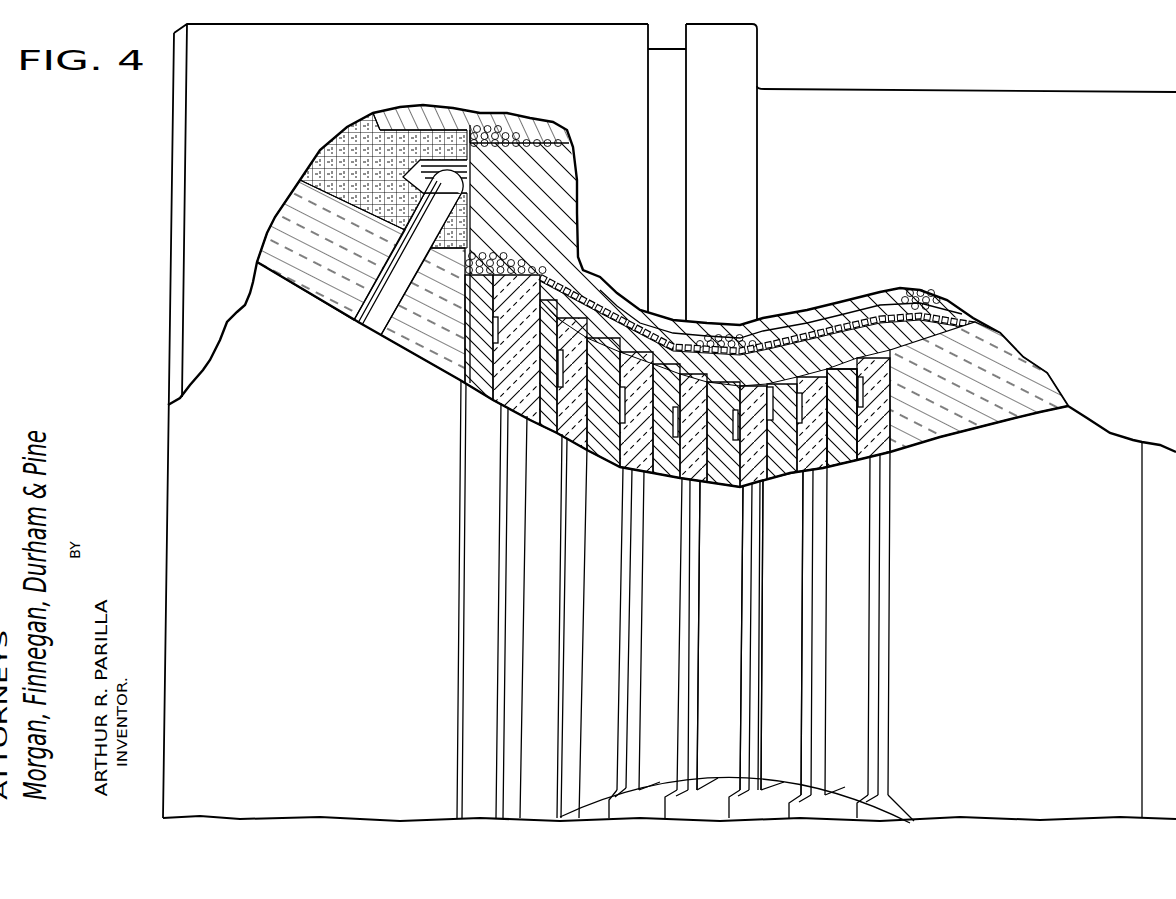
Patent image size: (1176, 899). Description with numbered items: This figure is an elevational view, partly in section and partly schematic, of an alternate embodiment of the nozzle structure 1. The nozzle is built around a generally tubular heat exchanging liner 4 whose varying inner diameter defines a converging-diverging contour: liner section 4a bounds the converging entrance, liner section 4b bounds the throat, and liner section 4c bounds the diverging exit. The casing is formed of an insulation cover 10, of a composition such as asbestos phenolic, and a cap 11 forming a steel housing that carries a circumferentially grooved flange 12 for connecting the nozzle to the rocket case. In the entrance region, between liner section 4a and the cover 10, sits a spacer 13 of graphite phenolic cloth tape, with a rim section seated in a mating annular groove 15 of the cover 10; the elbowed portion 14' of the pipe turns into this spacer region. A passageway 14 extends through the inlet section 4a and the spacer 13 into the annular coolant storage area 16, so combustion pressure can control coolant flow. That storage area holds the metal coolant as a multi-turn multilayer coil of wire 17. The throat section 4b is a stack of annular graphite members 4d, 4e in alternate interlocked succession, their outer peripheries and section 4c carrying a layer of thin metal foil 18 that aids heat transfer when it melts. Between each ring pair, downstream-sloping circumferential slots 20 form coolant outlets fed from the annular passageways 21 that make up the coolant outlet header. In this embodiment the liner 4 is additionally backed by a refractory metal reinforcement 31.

The nozzle structure 1 is at (964, 83).
The insulation cover 10 is at (316, 64).
The cap 11 is at (840, 97).
The circumferentially grooved flange 12 is at (758, 48).
The spacer 13 is at (387, 187).
The passageway 14 is at (390, 258).
The pipe elbow 14' is at (423, 139).
The annular groove 15 is at (440, 121).
The annular coolant storage area 16 is at (913, 294).
The multi-turn multilayer coil of wire 17 is at (560, 206).
The layer of thin metal foil 18 is at (574, 293).
The circumferential slots 20 is at (748, 579).
The annular passageways 21 is at (866, 381).
The refractory metal reinforcement 31 is at (822, 340).
The heat exchanging liner 4 is at (908, 466).
The liner section 4a is at (420, 348).
The liner section 4b is at (487, 414).
The liner section 4c is at (945, 435).
The annular graphite member 4d is at (795, 549).
The annular graphite member 4e is at (734, 549).